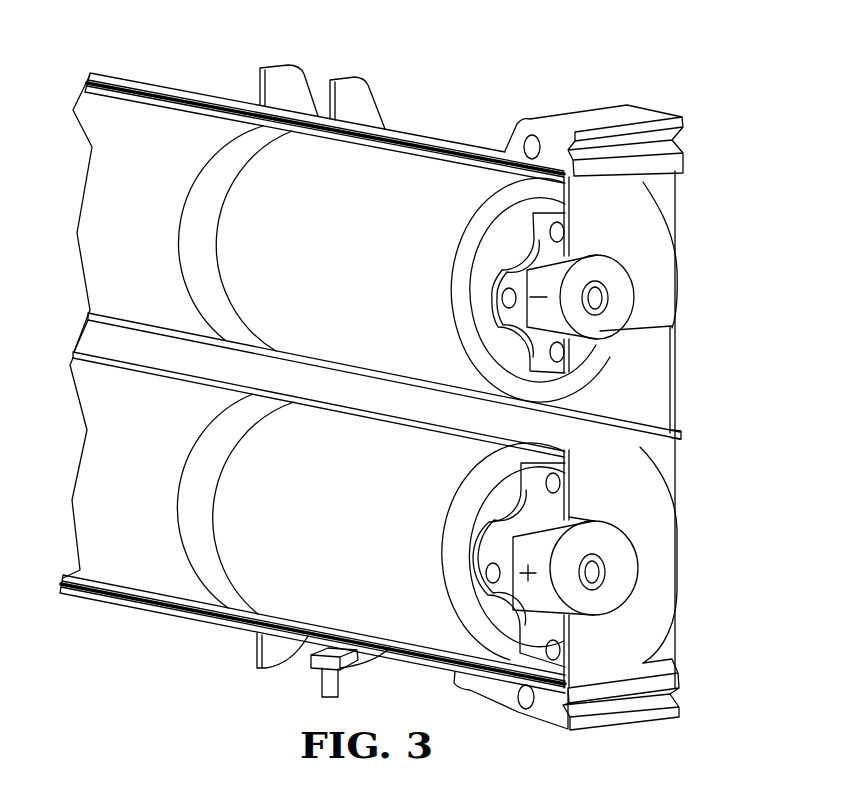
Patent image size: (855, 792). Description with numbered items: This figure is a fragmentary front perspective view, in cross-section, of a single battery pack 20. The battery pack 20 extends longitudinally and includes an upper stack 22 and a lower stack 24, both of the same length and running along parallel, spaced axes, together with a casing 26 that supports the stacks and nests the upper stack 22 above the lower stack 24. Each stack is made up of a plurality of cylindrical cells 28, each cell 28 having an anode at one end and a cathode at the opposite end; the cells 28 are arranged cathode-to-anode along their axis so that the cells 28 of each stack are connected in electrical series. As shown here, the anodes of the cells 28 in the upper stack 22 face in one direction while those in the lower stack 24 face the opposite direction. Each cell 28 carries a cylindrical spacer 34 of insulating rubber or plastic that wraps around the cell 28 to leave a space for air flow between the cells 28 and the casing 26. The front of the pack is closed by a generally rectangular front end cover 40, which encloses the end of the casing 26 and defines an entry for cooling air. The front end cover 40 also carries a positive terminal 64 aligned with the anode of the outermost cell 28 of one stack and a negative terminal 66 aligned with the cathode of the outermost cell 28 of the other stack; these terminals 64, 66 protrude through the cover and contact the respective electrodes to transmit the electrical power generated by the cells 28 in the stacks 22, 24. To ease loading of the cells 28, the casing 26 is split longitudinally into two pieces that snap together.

The battery pack 20 is at (452, 145).
The upper stack 22 is at (161, 128).
The lower stack 24 is at (98, 398).
The casing 26 is at (307, 637).
The cylindrical cell 28 is at (397, 165).
The spacer 34 is at (235, 142).
The front end cover 40 is at (650, 221).
The positive terminal 64 is at (620, 601).
The negative terminal 66 is at (622, 283).